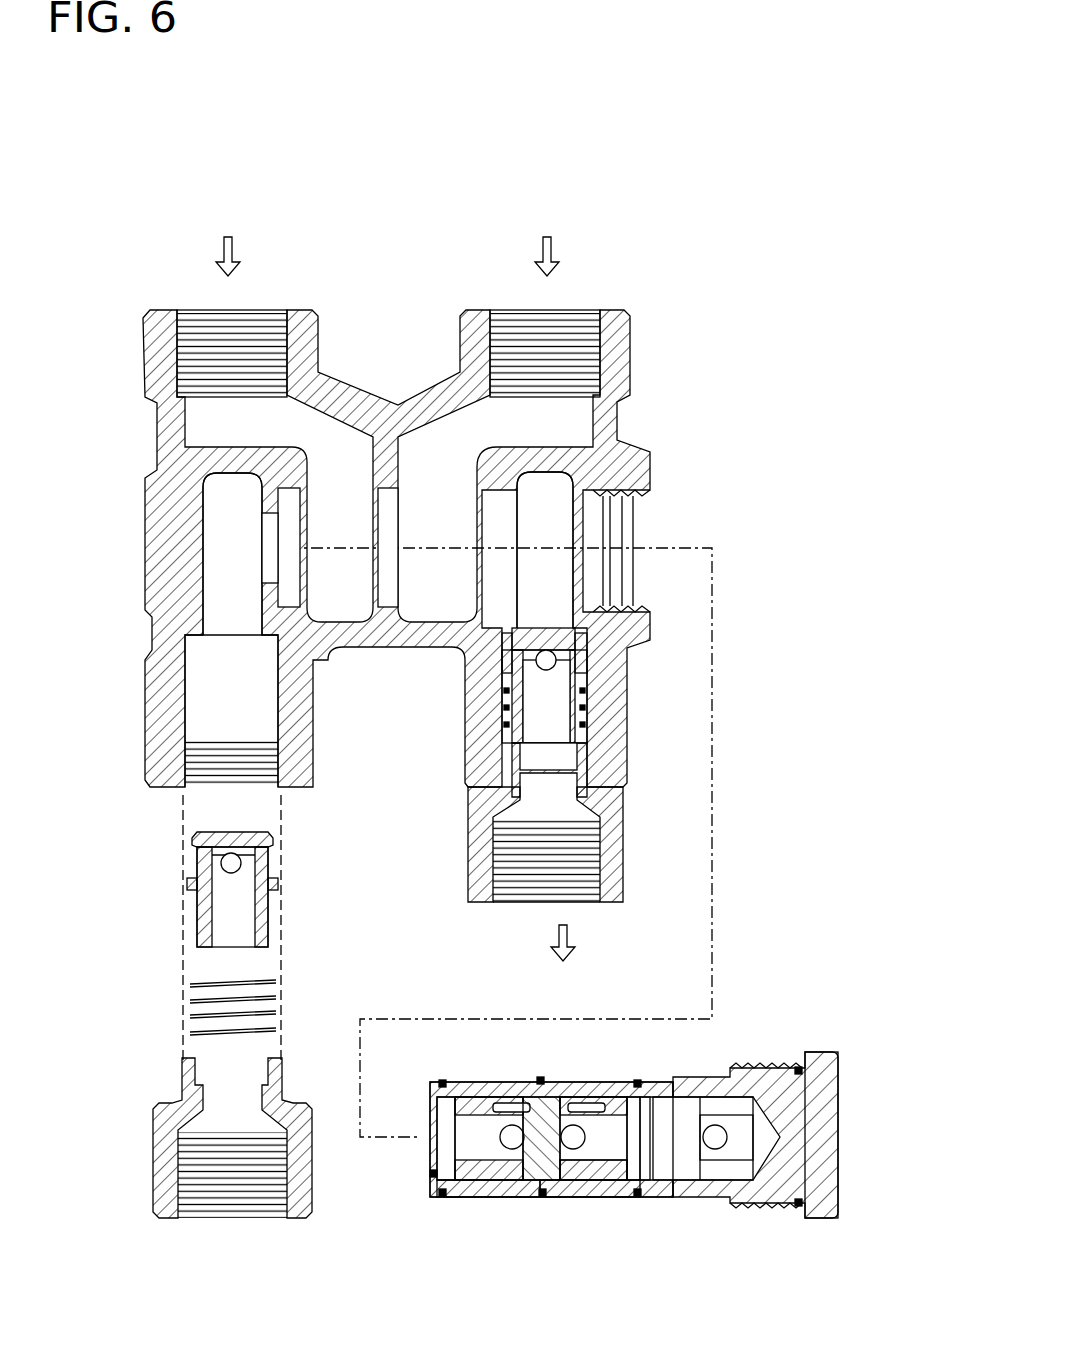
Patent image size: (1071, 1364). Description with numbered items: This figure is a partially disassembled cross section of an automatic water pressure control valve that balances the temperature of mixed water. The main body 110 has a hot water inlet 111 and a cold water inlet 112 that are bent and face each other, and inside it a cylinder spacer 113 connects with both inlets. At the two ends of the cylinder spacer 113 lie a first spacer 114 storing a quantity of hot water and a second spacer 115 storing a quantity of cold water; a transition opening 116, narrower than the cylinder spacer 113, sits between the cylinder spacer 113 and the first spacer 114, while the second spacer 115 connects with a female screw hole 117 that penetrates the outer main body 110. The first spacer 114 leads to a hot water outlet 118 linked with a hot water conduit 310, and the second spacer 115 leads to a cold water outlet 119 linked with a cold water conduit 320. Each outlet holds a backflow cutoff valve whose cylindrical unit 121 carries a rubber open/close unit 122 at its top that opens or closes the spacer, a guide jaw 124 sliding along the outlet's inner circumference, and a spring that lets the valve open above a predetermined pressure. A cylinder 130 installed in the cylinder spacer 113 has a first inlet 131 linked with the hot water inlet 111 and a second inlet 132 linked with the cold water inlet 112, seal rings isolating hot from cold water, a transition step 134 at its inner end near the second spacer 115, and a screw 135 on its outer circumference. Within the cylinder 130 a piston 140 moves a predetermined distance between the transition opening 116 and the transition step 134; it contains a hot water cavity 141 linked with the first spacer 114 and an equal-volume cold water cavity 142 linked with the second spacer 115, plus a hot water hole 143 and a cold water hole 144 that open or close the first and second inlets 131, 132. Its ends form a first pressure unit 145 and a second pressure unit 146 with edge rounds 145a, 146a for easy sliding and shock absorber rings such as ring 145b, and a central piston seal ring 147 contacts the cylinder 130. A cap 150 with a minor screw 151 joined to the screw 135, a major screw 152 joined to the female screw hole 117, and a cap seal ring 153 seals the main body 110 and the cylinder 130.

The main body 110 is at (362, 345).
The hot water inlet 111 is at (208, 310).
The cold water inlet 112 is at (580, 310).
The cylinder spacer 113 is at (290, 552).
The first spacer 114 is at (212, 493).
The second spacer 115 is at (560, 478).
The transition opening 116 is at (268, 578).
The female screw hole 117 is at (628, 492).
The hot water outlet 118 is at (205, 705).
The cold water outlet 119 is at (587, 652).
The cylindrical unit 121 is at (212, 918).
The open/close unit 122 is at (197, 838).
The guide jaw 124 is at (190, 884).
The cylinder 130 is at (450, 1205).
The first inlet 131 is at (510, 1185).
The second inlet 132 is at (590, 1185).
The transition step 134 is at (715, 1185).
The screw 135 is at (700, 1100).
The piston 140 is at (440, 1118).
The hot water cavity 141 is at (415, 1137).
The cold water cavity 142 is at (770, 1190).
The hot water hole 143 is at (513, 1105).
The cold water hole 144 is at (585, 1105).
The first pressure unit 145 is at (488, 1190).
The edge round 145a is at (462, 1097).
The shock absorber ring 145b is at (432, 1173).
The second pressure unit 146 is at (600, 1190).
The edge round 146a is at (637, 1083).
The piston seal ring 147 is at (545, 1100).
The cap 150 is at (835, 1120).
The minor screw 151 is at (680, 1100).
The major screw 152 is at (798, 1068).
The cap seal ring 153 is at (805, 1060).
The hot water conduit 310 is at (173, 1133).
The cold water conduit 320 is at (625, 833).